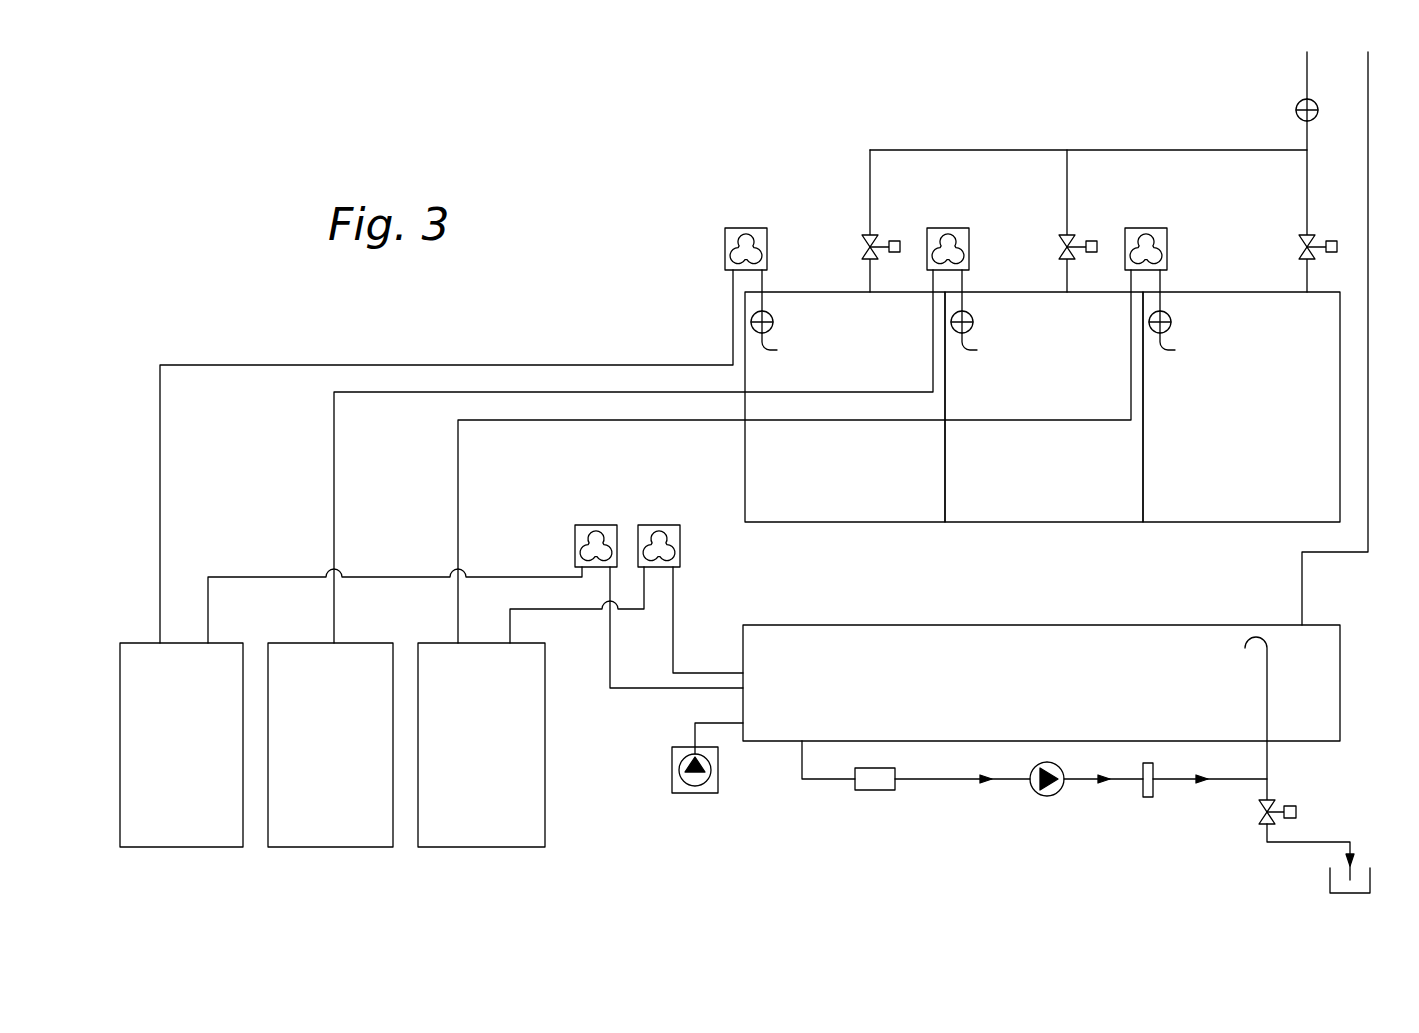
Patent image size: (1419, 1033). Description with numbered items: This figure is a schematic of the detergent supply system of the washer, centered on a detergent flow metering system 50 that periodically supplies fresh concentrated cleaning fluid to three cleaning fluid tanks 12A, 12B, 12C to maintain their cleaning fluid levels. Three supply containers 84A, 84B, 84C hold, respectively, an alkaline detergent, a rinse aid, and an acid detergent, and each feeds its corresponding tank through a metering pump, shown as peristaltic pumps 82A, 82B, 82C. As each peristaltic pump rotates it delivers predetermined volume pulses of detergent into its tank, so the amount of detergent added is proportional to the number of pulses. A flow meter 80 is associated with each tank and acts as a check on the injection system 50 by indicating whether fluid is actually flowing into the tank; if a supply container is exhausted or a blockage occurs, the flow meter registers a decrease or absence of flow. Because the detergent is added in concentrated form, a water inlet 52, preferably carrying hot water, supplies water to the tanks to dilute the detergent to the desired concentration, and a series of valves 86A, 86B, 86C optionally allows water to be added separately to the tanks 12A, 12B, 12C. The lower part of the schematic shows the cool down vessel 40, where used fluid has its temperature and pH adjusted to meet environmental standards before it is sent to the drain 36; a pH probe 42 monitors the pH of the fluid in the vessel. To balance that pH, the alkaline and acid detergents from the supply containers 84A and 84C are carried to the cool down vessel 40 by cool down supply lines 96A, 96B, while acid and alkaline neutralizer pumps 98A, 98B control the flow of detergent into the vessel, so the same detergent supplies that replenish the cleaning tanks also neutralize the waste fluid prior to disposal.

The detergent flow metering system 50 is at (840, 131).
The water inlet 52 is at (1298, 71).
The valve 86A is at (896, 218).
The valve 86B is at (1093, 218).
The valve 86C is at (1325, 218).
The peristaltic pump 82A is at (782, 250).
The peristaltic pump 82B is at (984, 250).
The peristaltic pump 82C is at (1182, 250).
The flow meter 80 is at (789, 324).
The cleaning fluid tank 12A is at (874, 491).
The cleaning fluid tank 12B is at (1057, 491).
The cleaning fluid tank 12C is at (1239, 491).
The supply container 84A is at (197, 762).
The supply container 84B is at (345, 762).
The supply container 84C is at (495, 762).
The cool down supply line 96A is at (263, 563).
The cool down supply line 96B is at (552, 621).
The acid neutralizer pump 98A is at (599, 512).
The alkaline neutralizer pump 98B is at (660, 512).
The cool down vessel 40 is at (1354, 712).
The pH probe 42 is at (1153, 797).
The drain 36 is at (1380, 853).